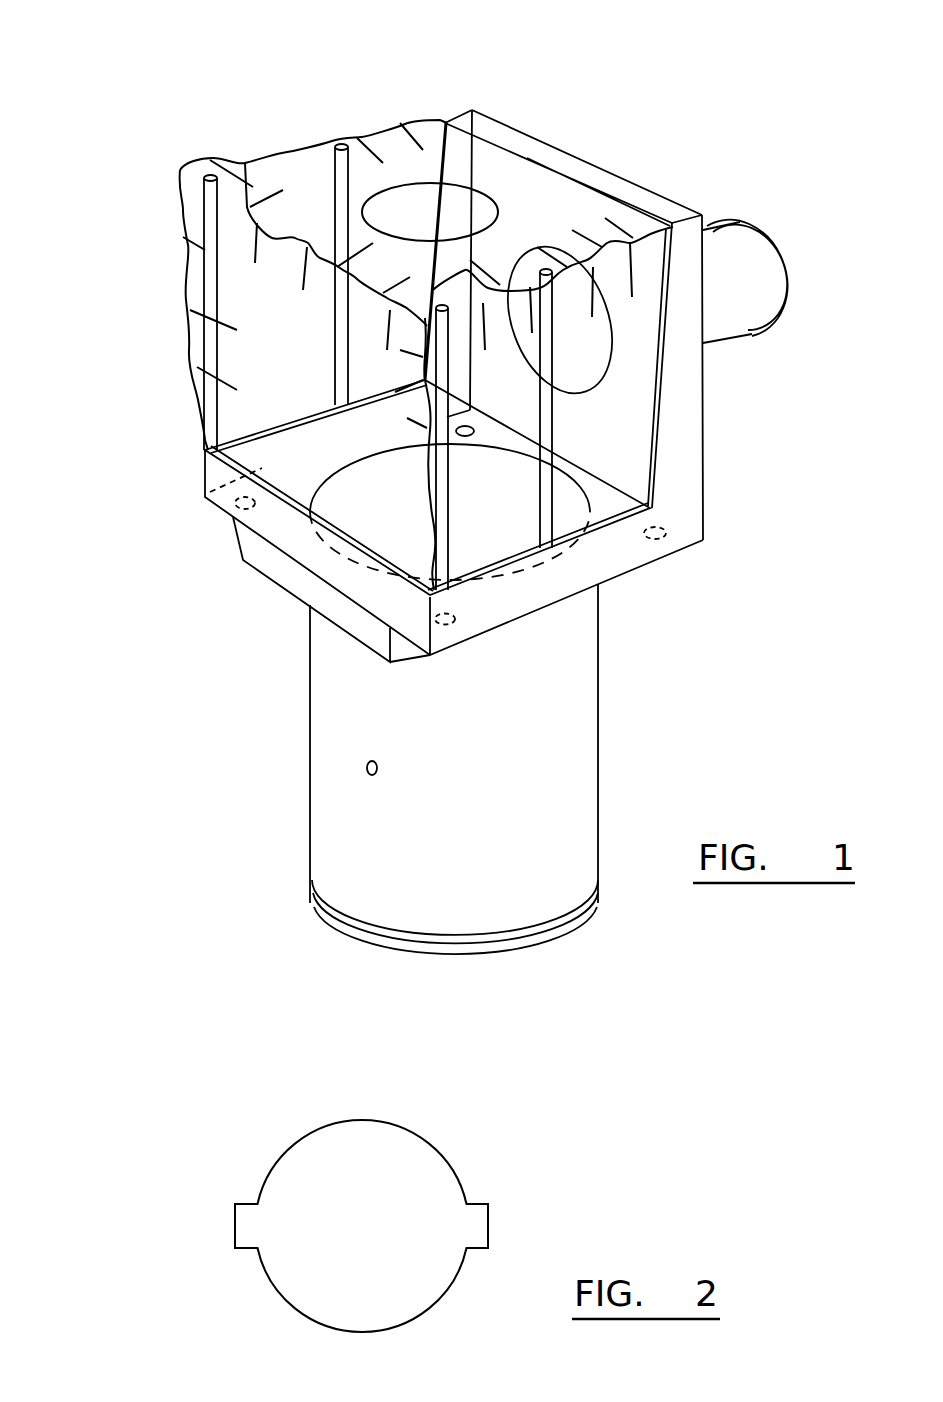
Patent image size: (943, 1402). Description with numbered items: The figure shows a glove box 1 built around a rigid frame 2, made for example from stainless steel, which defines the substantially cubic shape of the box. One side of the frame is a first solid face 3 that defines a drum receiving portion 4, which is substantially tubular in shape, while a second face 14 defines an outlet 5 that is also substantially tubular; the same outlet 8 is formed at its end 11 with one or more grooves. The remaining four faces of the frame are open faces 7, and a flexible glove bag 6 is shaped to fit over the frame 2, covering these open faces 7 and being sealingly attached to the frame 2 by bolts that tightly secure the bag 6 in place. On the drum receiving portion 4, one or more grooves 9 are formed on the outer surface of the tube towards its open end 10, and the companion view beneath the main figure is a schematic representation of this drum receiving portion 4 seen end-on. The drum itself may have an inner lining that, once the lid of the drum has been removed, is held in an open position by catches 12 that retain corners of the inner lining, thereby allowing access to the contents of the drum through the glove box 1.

The glove box 1 is at (564, 278).
The rigid frame 2 is at (210, 212).
The first solid face 3 is at (308, 487).
The drum receiving portion 4 is at (327, 690).
The outlet 5 is at (578, 372).
The flexible glove bag 6 is at (287, 148).
The open faces 7 is at (288, 306).
The outlet 8 is at (720, 320).
The grooves 9 is at (360, 925).
The open end 10 is at (530, 942).
The end of the outlet 11 is at (775, 247).
The catches 12 is at (240, 502).
The second face 14 is at (527, 124).